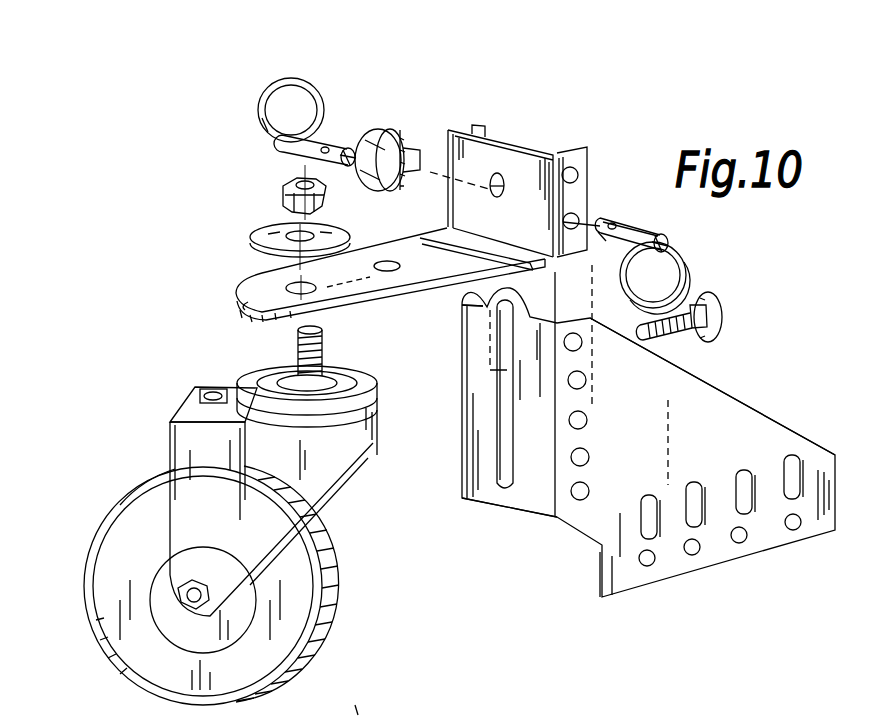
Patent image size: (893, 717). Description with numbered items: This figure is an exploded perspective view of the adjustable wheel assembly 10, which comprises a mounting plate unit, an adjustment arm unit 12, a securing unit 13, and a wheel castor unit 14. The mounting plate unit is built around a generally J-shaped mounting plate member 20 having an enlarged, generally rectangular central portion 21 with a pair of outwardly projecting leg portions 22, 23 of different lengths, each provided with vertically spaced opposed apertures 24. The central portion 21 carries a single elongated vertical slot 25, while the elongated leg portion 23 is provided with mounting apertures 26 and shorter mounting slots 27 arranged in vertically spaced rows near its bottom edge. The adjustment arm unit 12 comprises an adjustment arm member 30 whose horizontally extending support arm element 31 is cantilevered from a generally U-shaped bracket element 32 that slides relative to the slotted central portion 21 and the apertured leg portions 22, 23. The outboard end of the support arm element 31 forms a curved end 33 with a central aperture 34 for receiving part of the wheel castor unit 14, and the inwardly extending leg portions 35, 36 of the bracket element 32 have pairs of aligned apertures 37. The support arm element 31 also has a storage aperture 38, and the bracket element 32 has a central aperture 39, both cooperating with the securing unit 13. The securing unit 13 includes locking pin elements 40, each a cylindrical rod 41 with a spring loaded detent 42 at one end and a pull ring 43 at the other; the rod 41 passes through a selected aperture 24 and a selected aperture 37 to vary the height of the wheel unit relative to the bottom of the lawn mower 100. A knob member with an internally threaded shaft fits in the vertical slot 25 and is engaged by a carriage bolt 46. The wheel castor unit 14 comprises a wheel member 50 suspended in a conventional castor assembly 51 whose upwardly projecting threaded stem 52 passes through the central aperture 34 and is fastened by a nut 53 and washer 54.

The adjustable wheel assembly 10 is at (168, 179).
The adjustment arm unit 12 is at (545, 123).
The securing unit 13 is at (354, 121).
The wheel castor unit 14 is at (117, 471).
The mounting plate member 20 is at (475, 521).
The central portion 21 is at (540, 498).
The leg portion 22 is at (456, 300).
The elongated leg portion 23 is at (735, 418).
The apertures 24 is at (581, 490).
The elongated vertical slot 25 is at (503, 448).
The mounting apertures 26 is at (714, 602).
The mounting slots 27 is at (788, 474).
The adjustment arm member 30 is at (228, 290).
The support arm element 31 is at (457, 264).
The U-shaped bracket element 32 is at (528, 230).
The curved end 33 is at (248, 308).
The central aperture 34 is at (355, 266).
The leg portion 35 is at (498, 88).
The leg portion 36 is at (578, 152).
The aligned apertures 37 is at (575, 222).
The storage aperture 38 is at (390, 260).
The central aperture 39 is at (492, 197).
The locking pin element 40 is at (254, 110).
The cylindrical rod 41 is at (650, 226).
The spring loaded detent 42 is at (606, 245).
The pull ring 43 is at (688, 268).
The carriage bolt 46 is at (720, 310).
The wheel member 50 is at (332, 590).
The castor assembly 51 is at (245, 544).
The threaded stem 52 is at (316, 352).
The nut 53 is at (282, 193).
The washer 54 is at (252, 237).
The lawn mower 100 is at (361, 698).